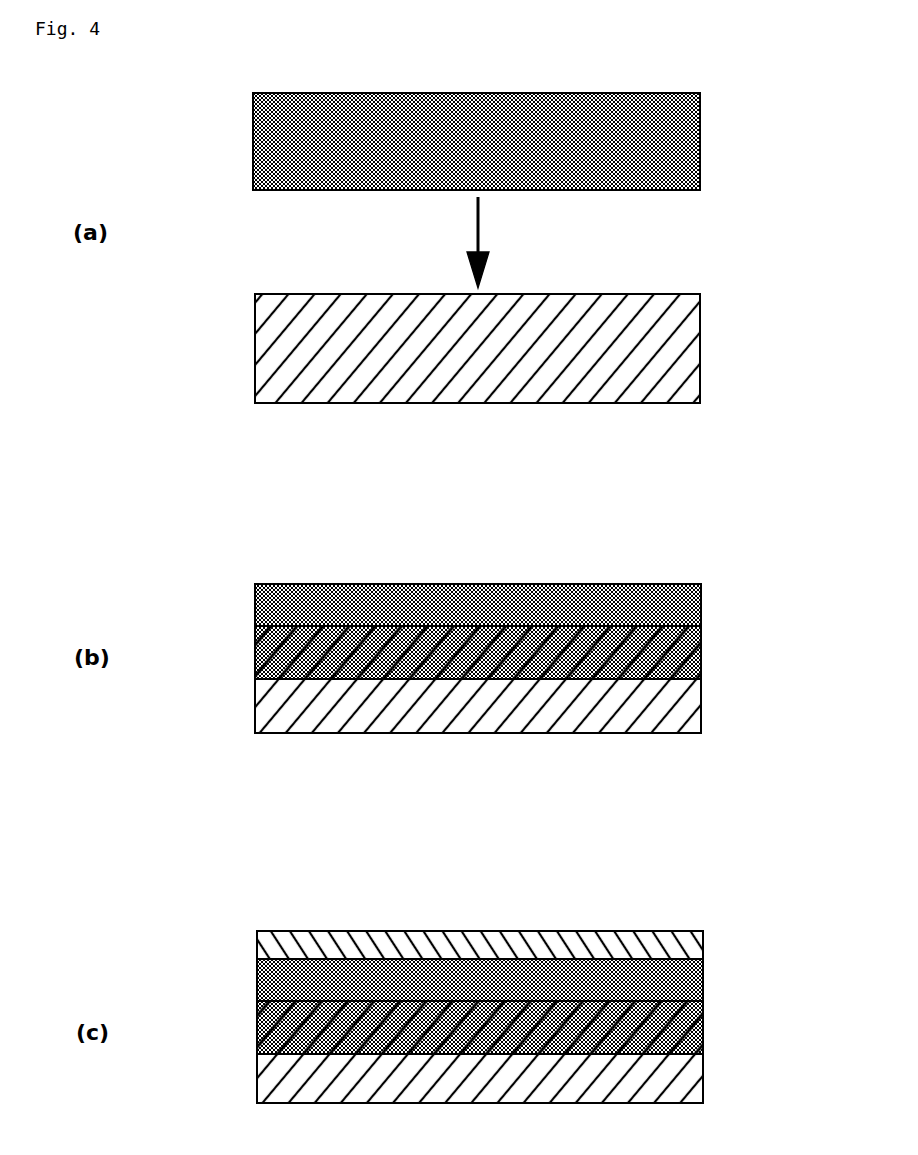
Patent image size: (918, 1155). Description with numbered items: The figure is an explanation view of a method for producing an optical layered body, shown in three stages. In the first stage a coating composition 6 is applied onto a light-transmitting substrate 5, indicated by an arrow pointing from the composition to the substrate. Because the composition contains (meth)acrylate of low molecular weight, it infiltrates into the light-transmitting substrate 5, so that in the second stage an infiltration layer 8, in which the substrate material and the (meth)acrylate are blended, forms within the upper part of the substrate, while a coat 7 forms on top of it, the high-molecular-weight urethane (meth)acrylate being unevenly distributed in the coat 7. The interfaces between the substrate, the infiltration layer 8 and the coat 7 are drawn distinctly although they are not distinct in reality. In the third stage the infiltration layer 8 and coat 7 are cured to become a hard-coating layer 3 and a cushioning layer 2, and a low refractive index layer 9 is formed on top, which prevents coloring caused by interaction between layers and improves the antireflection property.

The cushioning layer 2 is at (678, 977).
The hard-coating layer 3 is at (678, 1030).
The light-transmitting substrate 5 is at (674, 360).
The coating composition 6 is at (673, 150).
The coat 7 is at (676, 602).
The infiltration layer 8 is at (676, 652).
The low refractive index layer 9 is at (690, 933).